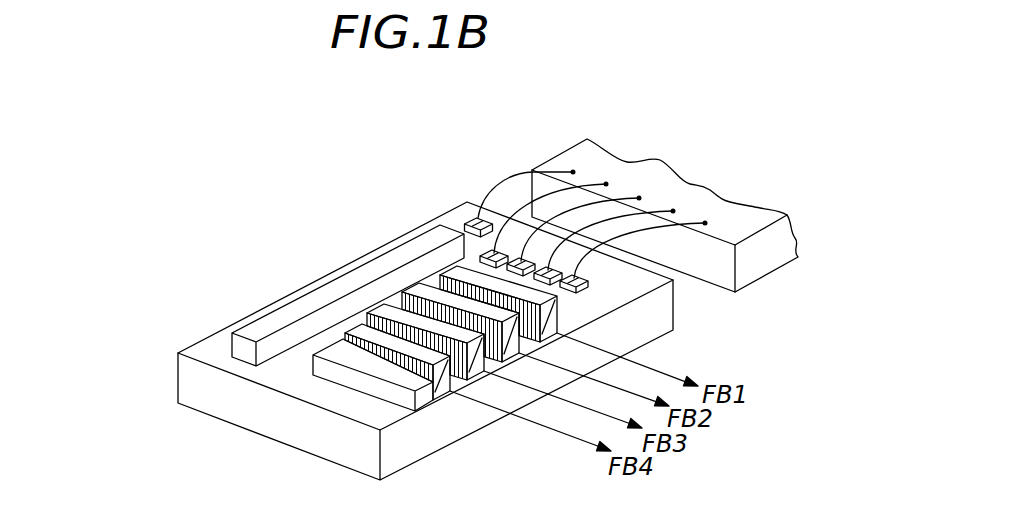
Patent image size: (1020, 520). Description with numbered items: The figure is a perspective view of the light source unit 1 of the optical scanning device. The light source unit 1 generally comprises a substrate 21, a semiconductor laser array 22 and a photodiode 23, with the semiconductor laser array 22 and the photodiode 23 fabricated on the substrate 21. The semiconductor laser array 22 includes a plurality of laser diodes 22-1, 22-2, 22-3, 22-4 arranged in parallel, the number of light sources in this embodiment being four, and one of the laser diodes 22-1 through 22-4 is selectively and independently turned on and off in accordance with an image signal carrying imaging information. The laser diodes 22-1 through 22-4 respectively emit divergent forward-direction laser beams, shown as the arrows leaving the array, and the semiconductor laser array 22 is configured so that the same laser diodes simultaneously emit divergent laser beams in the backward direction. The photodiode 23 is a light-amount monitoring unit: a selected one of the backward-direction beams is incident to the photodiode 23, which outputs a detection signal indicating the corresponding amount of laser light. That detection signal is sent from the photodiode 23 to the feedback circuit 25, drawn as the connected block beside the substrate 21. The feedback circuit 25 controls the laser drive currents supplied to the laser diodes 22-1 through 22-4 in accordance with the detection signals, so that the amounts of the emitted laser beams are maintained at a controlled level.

The light source unit 1 is at (190, 186).
The substrate 21 is at (254, 415).
The semiconductor laser array 22 is at (360, 388).
The laser diode 22-1 is at (498, 296).
The laser diode 22-2 is at (482, 322).
The laser diode 22-3 is at (425, 337).
The laser diode 22-4 is at (380, 353).
The photodiode 23 is at (466, 224).
The feedback circuit 25 is at (700, 198).